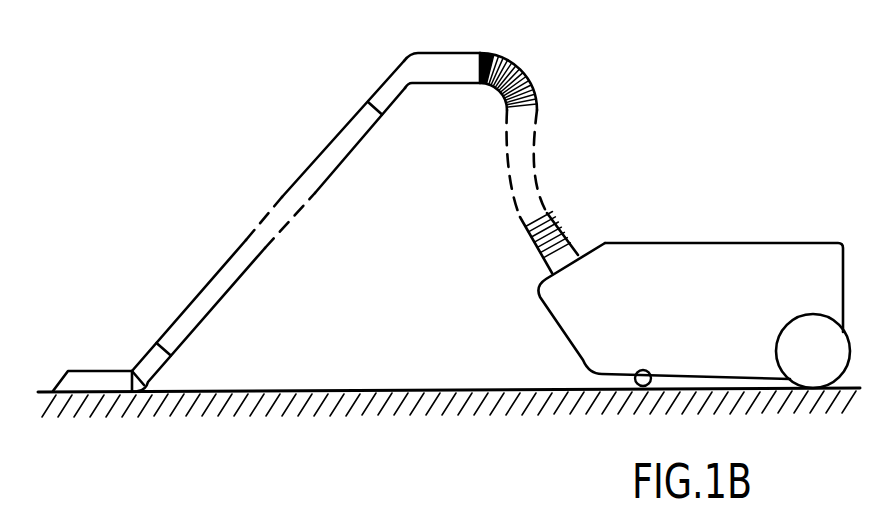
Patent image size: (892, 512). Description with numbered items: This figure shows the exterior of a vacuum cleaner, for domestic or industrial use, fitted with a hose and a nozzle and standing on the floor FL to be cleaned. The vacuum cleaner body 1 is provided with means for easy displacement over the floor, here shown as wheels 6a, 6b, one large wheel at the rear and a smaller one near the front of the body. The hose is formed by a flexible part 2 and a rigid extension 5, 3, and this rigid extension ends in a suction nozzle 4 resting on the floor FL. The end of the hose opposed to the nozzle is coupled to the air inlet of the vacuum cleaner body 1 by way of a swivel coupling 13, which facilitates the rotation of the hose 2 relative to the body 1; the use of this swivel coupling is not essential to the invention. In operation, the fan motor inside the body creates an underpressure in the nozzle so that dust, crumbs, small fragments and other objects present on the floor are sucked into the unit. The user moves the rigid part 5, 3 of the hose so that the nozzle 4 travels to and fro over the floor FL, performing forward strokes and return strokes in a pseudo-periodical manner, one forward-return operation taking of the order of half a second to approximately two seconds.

The vacuum cleaner body 1 is at (762, 268).
The flexible part of the hose 2 is at (524, 112).
The rigid extension 3 is at (217, 286).
The suction nozzle 4 is at (104, 380).
The rigid extension 5 is at (462, 64).
The wheel 6a is at (798, 340).
The wheel 6b is at (598, 382).
The swivel coupling 13 is at (573, 249).
The floor FL is at (304, 389).